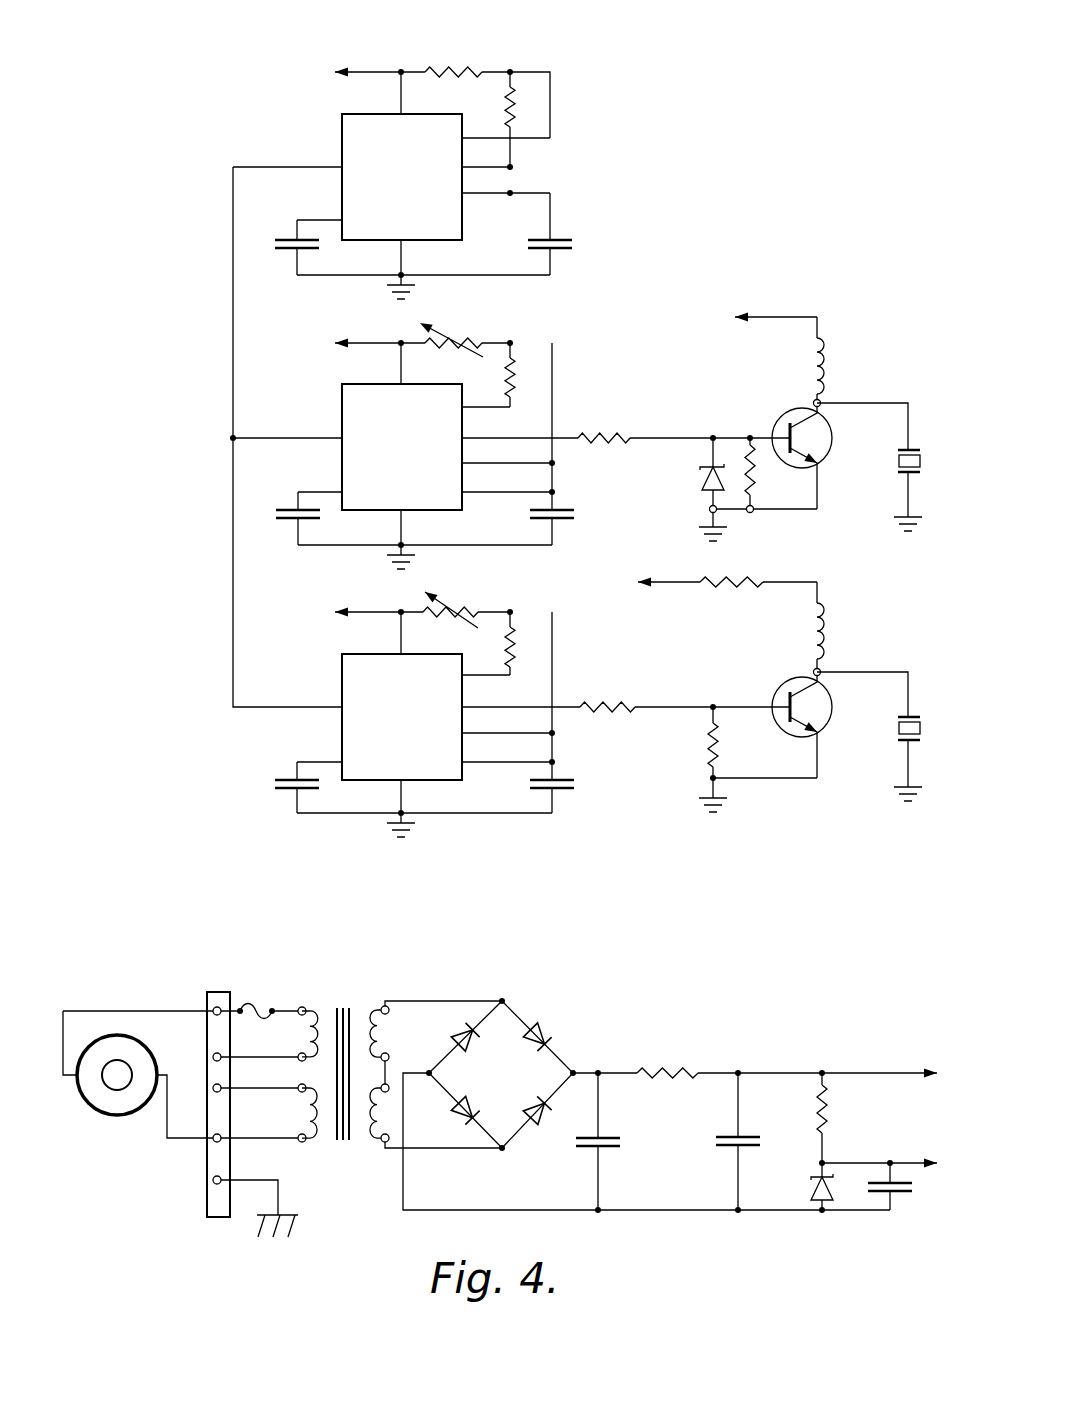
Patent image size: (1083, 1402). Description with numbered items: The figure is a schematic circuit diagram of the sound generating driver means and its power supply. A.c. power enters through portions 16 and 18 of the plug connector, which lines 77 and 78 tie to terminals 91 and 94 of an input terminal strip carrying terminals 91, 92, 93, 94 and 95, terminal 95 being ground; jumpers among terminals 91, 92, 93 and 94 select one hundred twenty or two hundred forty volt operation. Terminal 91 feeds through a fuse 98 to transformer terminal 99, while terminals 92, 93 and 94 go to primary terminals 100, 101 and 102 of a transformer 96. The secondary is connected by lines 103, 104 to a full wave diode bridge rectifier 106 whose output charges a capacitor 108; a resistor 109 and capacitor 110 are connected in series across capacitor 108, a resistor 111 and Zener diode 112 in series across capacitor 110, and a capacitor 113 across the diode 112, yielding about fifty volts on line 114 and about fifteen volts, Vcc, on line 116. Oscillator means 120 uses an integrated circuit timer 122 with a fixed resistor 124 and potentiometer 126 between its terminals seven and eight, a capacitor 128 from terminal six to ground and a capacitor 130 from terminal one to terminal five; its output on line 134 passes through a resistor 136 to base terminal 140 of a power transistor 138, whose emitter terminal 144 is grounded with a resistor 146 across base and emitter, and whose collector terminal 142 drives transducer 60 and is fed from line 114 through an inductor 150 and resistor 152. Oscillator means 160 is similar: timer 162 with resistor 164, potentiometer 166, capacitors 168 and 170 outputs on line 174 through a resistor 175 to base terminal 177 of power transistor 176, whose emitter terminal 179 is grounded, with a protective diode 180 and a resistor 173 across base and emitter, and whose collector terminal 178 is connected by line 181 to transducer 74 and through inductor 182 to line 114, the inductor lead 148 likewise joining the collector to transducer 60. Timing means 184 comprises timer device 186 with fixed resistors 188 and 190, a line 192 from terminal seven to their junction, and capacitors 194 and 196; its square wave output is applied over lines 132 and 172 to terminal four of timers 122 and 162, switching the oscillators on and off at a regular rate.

The portion of the electrical connector element 16 is at (91, 1104).
The portion of the electrical connector element 18 is at (120, 1070).
The transducer 60 is at (921, 710).
The transducer 74 is at (888, 453).
The line 77 is at (101, 1011).
The line 78 is at (166, 1133).
The terminal 91 is at (224, 1005).
The terminal 92 is at (220, 1057).
The terminal 93 is at (226, 1086).
The terminal 94 is at (226, 1134).
The ground terminal 95 is at (226, 1174).
The transformer 96 is at (348, 998).
The fuse 98 is at (252, 1008).
The transformer terminal 99 is at (304, 1009).
The transformer primary terminal 100 is at (303, 1044).
The transformer primary terminal 101 is at (322, 1074).
The transformer primary terminal 102 is at (306, 1144).
The line 103 is at (447, 984).
The line 104 is at (427, 1152).
The full wave diode bridge rectifier 106 is at (502, 1075).
The capacitor 108 is at (576, 1158).
The resistor 109 is at (676, 1066).
The capacitor 110 is at (716, 1156).
The resistor 111 is at (816, 1106).
The Zener diode 112 is at (810, 1189).
The capacitor 113 is at (909, 1192).
The line 114 is at (784, 316).
The line 116 is at (354, 70).
The oscillator means 120 is at (564, 509).
The integrated circuit timer 122 is at (342, 668).
The fixed resistor 124 is at (504, 642).
The variable resistor or potentiometer 126 is at (455, 606).
The capacitor 128 is at (574, 788).
The capacitor 130 is at (274, 784).
The line 132 is at (256, 711).
The line 134 is at (521, 707).
The resistor 136 is at (614, 714).
The power transistor 138 is at (781, 690).
The base terminal 140 is at (713, 705).
The collector terminal 142 is at (820, 676).
The emitter terminal 144 is at (820, 732).
The resistor 146 is at (704, 752).
The transducer lead 148 is at (903, 659).
The inductor 150 is at (829, 623).
The resistor 152 is at (760, 600).
The oscillator means 160 is at (576, 436).
The integrated circuit timer 162 is at (342, 470).
The fixed resistor 164 is at (503, 377).
The variable resistor or potentiometer 166 is at (458, 336).
The capacitor 168 is at (574, 516).
The capacitor 170 is at (276, 514).
The line 172 is at (306, 438).
The resistor 173 is at (762, 496).
The line 174 is at (521, 438).
The resistor 175 is at (608, 436).
The power transistor 176 is at (800, 410).
The base terminal 177 is at (713, 438).
The collector terminal 178 is at (818, 396).
The emitter terminal 179 is at (822, 464).
The protective diode 180 is at (705, 481).
The line 181 is at (871, 403).
The inductor 182 is at (812, 372).
The timing means 184 is at (442, 161).
The integrated circuit timer device 186 is at (342, 125).
The fixed resistor 188 is at (506, 100).
The fixed resistor 190 is at (476, 44).
The line 192 is at (550, 99).
The capacitor 194 is at (578, 242).
The capacitor 196 is at (275, 244).